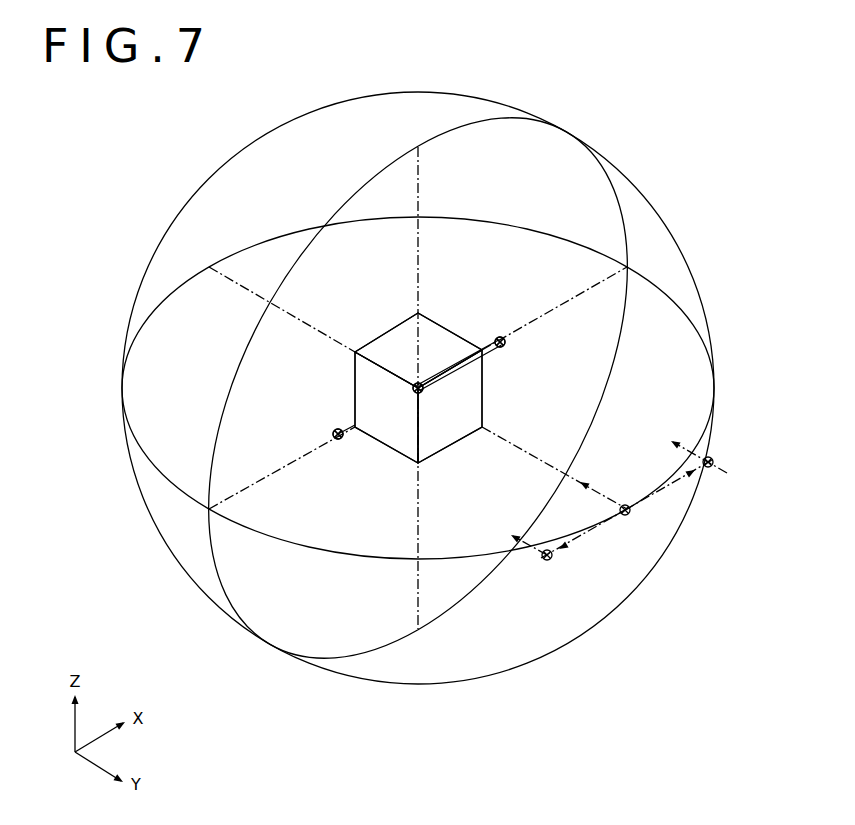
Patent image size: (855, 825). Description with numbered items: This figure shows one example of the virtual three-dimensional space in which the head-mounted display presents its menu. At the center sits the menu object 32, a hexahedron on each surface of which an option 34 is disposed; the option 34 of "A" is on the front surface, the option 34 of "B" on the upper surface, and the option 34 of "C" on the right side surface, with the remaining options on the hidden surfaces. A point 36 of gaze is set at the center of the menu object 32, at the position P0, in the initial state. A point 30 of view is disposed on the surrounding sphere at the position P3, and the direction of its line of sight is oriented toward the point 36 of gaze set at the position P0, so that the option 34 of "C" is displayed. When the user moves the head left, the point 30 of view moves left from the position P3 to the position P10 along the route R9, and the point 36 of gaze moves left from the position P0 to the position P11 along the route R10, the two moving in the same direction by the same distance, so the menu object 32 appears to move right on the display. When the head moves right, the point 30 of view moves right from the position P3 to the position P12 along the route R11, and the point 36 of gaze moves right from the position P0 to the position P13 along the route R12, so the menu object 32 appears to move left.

The point of view 30 is at (631, 521).
The menu object 32 is at (470, 434).
The option 34 is at (428, 323).
The point of gaze 36 is at (504, 338).
The position P0 is at (413, 384).
The position P3 is at (625, 504).
The position P10 is at (549, 561).
The position P11 is at (337, 440).
The position P12 is at (714, 460).
The position P13 is at (507, 343).
The route R9 is at (584, 533).
The route R10 is at (362, 420).
The route R11 is at (660, 494).
The route R12 is at (474, 360).